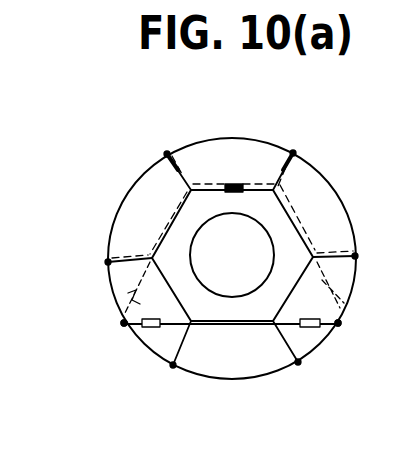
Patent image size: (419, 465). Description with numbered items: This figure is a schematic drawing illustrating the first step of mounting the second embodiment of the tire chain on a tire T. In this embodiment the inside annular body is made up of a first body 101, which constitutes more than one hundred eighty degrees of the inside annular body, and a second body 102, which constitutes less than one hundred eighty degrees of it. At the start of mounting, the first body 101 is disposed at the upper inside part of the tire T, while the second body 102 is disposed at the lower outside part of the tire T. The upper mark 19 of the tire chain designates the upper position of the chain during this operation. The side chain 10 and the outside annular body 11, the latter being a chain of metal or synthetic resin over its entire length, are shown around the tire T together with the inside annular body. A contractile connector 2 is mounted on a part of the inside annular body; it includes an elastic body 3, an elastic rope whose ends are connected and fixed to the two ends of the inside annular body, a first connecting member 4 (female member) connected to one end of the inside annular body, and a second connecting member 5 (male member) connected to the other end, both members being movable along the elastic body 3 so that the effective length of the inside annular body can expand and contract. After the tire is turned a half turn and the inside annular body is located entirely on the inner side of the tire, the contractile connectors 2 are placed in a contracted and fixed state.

The tire/ring T is at (131, 183).
The contractile connector 2 is at (128, 343).
The elastic body 3 is at (123, 322).
The first connecting member 4 is at (105, 287).
The second connecting member 5 is at (151, 328).
The side chain 10 is at (290, 338).
The outside annular body 11 is at (302, 224).
The upper mark 19 is at (235, 183).
The first body 101 is at (296, 211).
The second body 102 is at (173, 325).